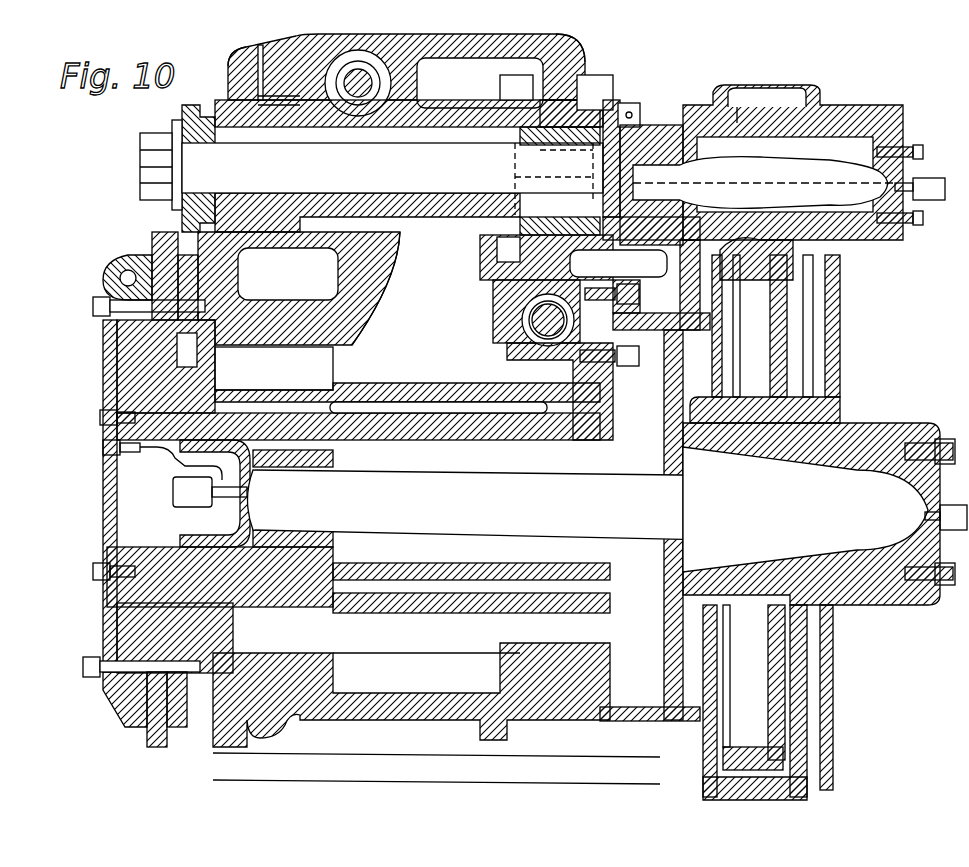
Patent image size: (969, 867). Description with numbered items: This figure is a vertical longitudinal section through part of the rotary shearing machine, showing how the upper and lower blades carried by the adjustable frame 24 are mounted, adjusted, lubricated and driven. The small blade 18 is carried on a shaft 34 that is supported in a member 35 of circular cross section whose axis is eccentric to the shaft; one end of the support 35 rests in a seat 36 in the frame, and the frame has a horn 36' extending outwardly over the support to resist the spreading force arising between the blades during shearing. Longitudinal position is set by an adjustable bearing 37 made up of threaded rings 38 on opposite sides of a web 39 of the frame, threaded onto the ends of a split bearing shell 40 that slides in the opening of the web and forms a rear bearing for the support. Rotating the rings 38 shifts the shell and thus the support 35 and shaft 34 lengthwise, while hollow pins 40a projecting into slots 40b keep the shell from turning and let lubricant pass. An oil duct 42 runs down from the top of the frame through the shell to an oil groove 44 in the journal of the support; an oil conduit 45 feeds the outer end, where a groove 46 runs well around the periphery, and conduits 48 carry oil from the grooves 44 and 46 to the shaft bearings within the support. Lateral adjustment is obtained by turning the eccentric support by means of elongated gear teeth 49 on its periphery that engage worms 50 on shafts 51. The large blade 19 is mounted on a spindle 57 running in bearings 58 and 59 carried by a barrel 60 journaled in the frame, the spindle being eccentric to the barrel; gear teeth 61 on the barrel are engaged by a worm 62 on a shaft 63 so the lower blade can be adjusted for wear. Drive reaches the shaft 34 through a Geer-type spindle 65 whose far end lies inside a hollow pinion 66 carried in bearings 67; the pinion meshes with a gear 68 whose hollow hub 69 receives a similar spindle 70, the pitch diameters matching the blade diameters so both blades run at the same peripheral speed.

The small blade 18 is at (184, 108).
The large blade 19 is at (153, 231).
The frame 24 is at (350, 268).
The shaft 34 is at (190, 166).
The support 35 is at (458, 207).
The seat 36 is at (387, 288).
The horn 36' is at (207, 48).
The adjustable bearing 37 is at (620, 105).
The threaded rings 38 is at (505, 87).
The web 39 is at (548, 72).
The bearing shell 40 is at (545, 128).
The pins 40a is at (548, 130).
The slots 40b is at (582, 72).
The oil duct 42 is at (575, 66).
The oil groove 44 is at (554, 171).
The oil conduit 45 is at (256, 58).
The groove 46 is at (258, 96).
The conduits 48 is at (257, 105).
The gear teeth 49 is at (404, 104).
The worms 50 is at (351, 65).
The shafts 51 is at (364, 70).
The spindle 57 is at (117, 380).
The bearing 58 is at (117, 398).
The bearing 59 is at (568, 418).
The barrel 60 is at (420, 397).
The gear teeth 61 is at (540, 347).
The worm 62 is at (528, 320).
The shaft 63 is at (527, 310).
The spindle 65 is at (792, 170).
The pinion 66 is at (770, 117).
The bearings 67 is at (737, 106).
The gear 68 is at (780, 343).
The hub 69 is at (880, 583).
The spindle 70 is at (587, 498).